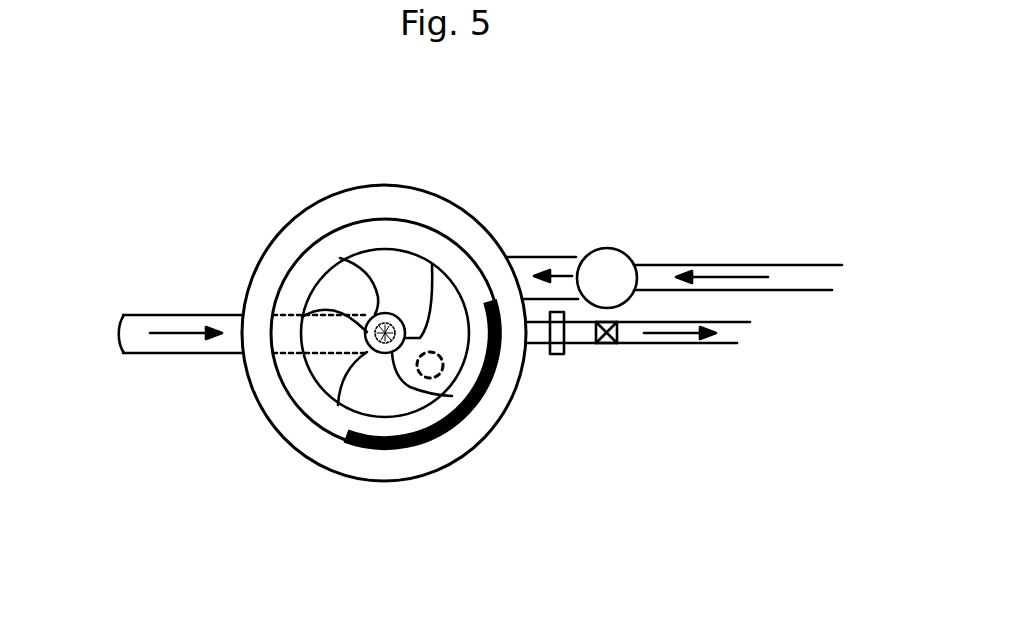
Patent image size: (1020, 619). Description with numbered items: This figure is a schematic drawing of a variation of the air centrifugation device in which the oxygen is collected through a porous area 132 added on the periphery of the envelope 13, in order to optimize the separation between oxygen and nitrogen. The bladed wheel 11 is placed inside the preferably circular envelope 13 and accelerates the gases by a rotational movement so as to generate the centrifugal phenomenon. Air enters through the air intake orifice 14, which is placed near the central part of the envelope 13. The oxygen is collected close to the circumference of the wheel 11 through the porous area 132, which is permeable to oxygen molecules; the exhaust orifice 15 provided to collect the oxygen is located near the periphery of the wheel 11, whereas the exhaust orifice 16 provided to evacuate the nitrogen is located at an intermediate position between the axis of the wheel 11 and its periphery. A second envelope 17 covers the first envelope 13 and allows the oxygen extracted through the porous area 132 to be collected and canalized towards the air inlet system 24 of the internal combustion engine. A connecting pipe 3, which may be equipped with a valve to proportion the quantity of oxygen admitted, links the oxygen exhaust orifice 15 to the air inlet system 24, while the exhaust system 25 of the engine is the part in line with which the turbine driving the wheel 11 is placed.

The connecting pipe 3 is at (577, 345).
The wheel 11 is at (357, 262).
The envelope 13 is at (290, 267).
The air intake orifice 14 is at (376, 356).
The exhaust orifice 15 is at (540, 345).
The exhaust orifice 16 is at (430, 355).
The second envelope 17 is at (400, 481).
The air inlet system 24 is at (643, 345).
The exhaust system 25 is at (530, 273).
The porous area 132 is at (453, 427).